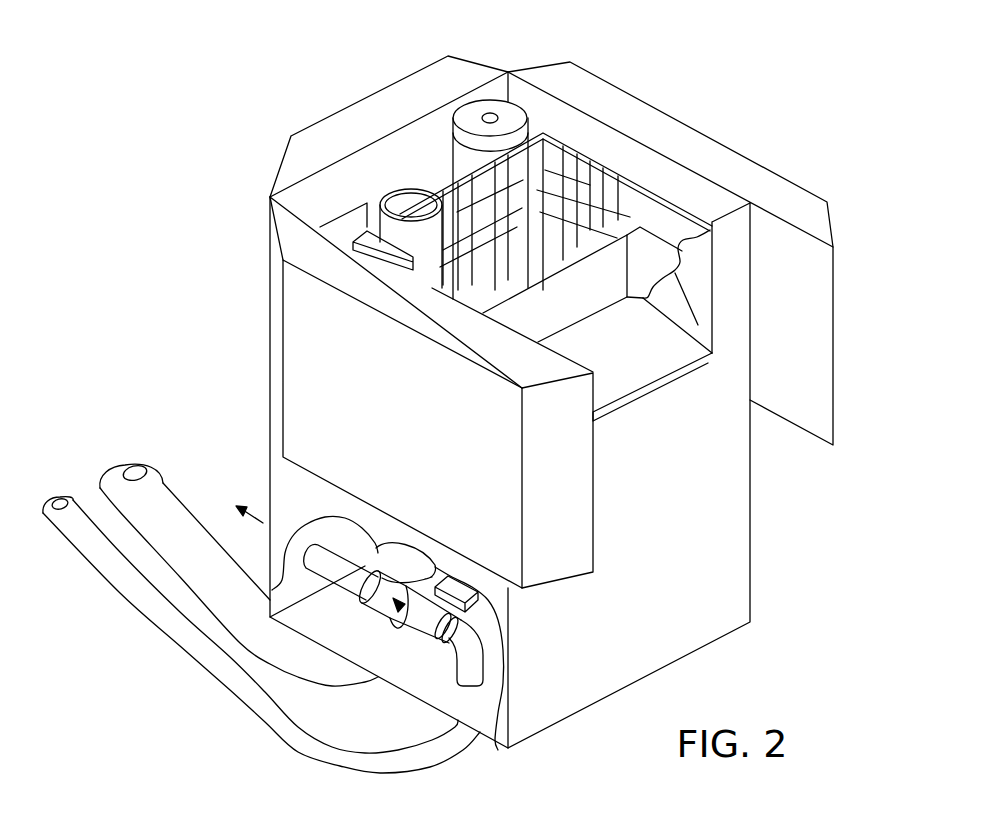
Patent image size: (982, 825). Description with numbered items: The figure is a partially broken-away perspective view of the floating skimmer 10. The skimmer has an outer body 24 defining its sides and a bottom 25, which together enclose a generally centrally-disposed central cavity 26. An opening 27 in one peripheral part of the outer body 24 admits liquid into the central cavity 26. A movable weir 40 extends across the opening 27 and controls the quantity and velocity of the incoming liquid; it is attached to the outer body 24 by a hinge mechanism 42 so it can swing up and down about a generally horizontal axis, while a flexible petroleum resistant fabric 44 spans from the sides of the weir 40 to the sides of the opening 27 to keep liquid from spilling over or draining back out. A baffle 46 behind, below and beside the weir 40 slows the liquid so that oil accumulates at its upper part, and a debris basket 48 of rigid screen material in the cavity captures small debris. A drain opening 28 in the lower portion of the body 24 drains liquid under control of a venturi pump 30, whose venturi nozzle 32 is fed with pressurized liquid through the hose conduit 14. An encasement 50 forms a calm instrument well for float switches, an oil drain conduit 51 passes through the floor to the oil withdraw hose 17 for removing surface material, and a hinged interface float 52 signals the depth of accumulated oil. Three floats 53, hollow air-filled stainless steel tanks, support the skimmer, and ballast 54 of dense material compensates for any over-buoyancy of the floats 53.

The floating skimmer 10 is at (762, 155).
The hose conduit 14 is at (297, 752).
The oil withdraw hose 17 is at (157, 490).
The outer body 24 is at (722, 543).
The bottom 25 is at (490, 718).
The central cavity 26 is at (592, 193).
The opening 27 is at (700, 285).
The drain opening 28 is at (376, 597).
The venturi pump 30 is at (423, 623).
The venturi nozzle 32 is at (397, 608).
The movable weir 40 is at (610, 384).
The hinge mechanism 42 is at (703, 362).
The petroleum resistant fabric 44 is at (680, 232).
The baffle 46 is at (513, 307).
The debris basket 48 is at (576, 150).
The encasement 50 is at (512, 117).
The oil drain conduit 51 is at (398, 189).
The interface float 52 is at (388, 257).
The floats 53 is at (342, 137).
The ballast 54 is at (483, 584).